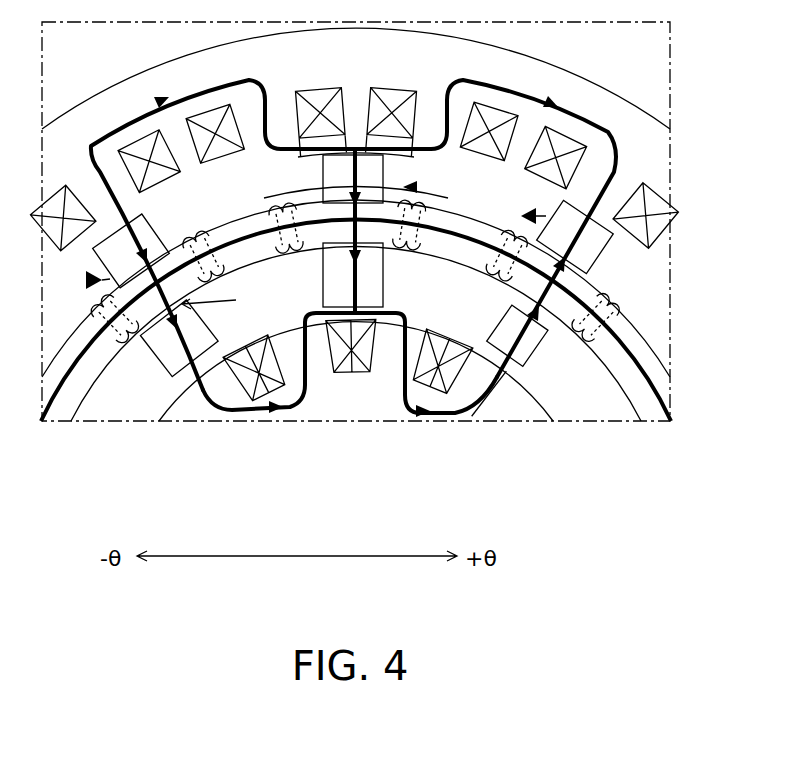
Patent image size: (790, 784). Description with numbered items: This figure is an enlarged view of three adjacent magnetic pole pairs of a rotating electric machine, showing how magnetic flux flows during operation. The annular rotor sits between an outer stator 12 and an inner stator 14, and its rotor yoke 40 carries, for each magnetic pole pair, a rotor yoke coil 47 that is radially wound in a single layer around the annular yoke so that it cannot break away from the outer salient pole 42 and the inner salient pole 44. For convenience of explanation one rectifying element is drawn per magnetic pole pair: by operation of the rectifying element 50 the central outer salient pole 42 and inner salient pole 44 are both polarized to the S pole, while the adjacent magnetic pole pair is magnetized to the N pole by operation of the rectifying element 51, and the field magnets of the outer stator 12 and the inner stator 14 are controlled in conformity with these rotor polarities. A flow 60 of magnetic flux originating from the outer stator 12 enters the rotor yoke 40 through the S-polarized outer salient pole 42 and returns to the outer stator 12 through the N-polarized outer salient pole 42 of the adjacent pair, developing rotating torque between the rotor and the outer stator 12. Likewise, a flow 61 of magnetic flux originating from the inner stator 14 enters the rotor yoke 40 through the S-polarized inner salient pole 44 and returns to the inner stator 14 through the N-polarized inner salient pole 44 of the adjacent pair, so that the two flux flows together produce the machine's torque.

The outer stator 12 is at (93, 120).
The inner stator 14 is at (328, 400).
The rotor yoke 40 is at (640, 353).
The outer salient pole 42 is at (323, 170).
The inner salient pole 44 is at (330, 291).
The rotor yoke coil 47 is at (393, 250).
The rectifying element 50 is at (418, 187).
The rectifying element 51 is at (527, 210).
The flow of magnetic flux 60 is at (600, 127).
The flow of magnetic flux 61 is at (400, 405).